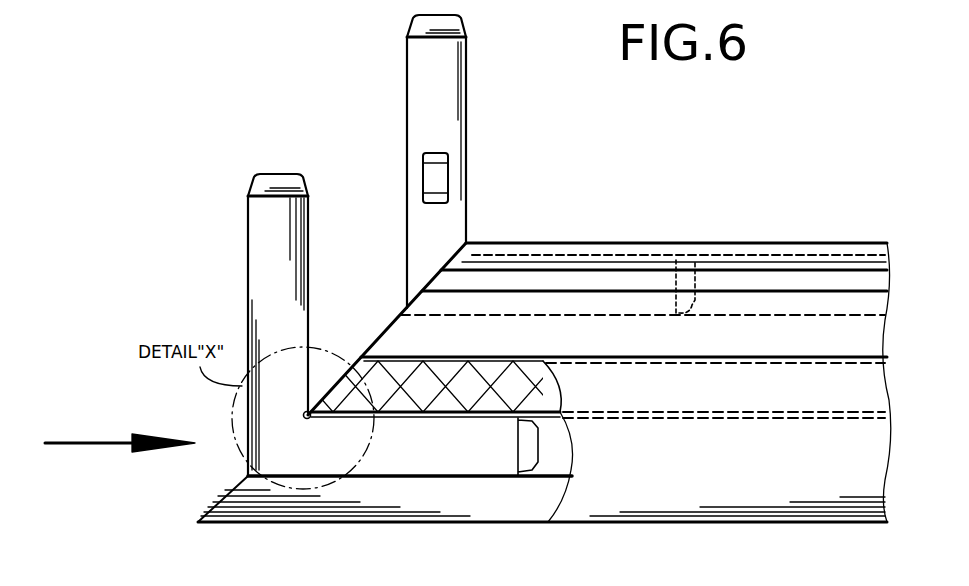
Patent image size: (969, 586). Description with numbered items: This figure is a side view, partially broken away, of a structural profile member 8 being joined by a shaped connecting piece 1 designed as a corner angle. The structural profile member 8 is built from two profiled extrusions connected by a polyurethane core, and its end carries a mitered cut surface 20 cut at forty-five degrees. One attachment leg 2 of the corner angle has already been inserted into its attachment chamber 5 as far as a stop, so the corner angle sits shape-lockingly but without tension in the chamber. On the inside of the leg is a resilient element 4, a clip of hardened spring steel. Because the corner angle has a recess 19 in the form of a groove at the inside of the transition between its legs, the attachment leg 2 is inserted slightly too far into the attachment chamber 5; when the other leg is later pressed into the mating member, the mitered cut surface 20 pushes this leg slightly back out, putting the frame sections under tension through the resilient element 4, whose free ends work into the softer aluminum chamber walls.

The shaped connecting piece 1 is at (393, 143).
The attachment leg 2 is at (466, 83).
The resilient element 4 is at (440, 181).
The attachment chamber 5 is at (440, 474).
The structural profile member 8 is at (631, 207).
The recess 19 is at (307, 428).
The mitered cut surface 20 is at (228, 493).